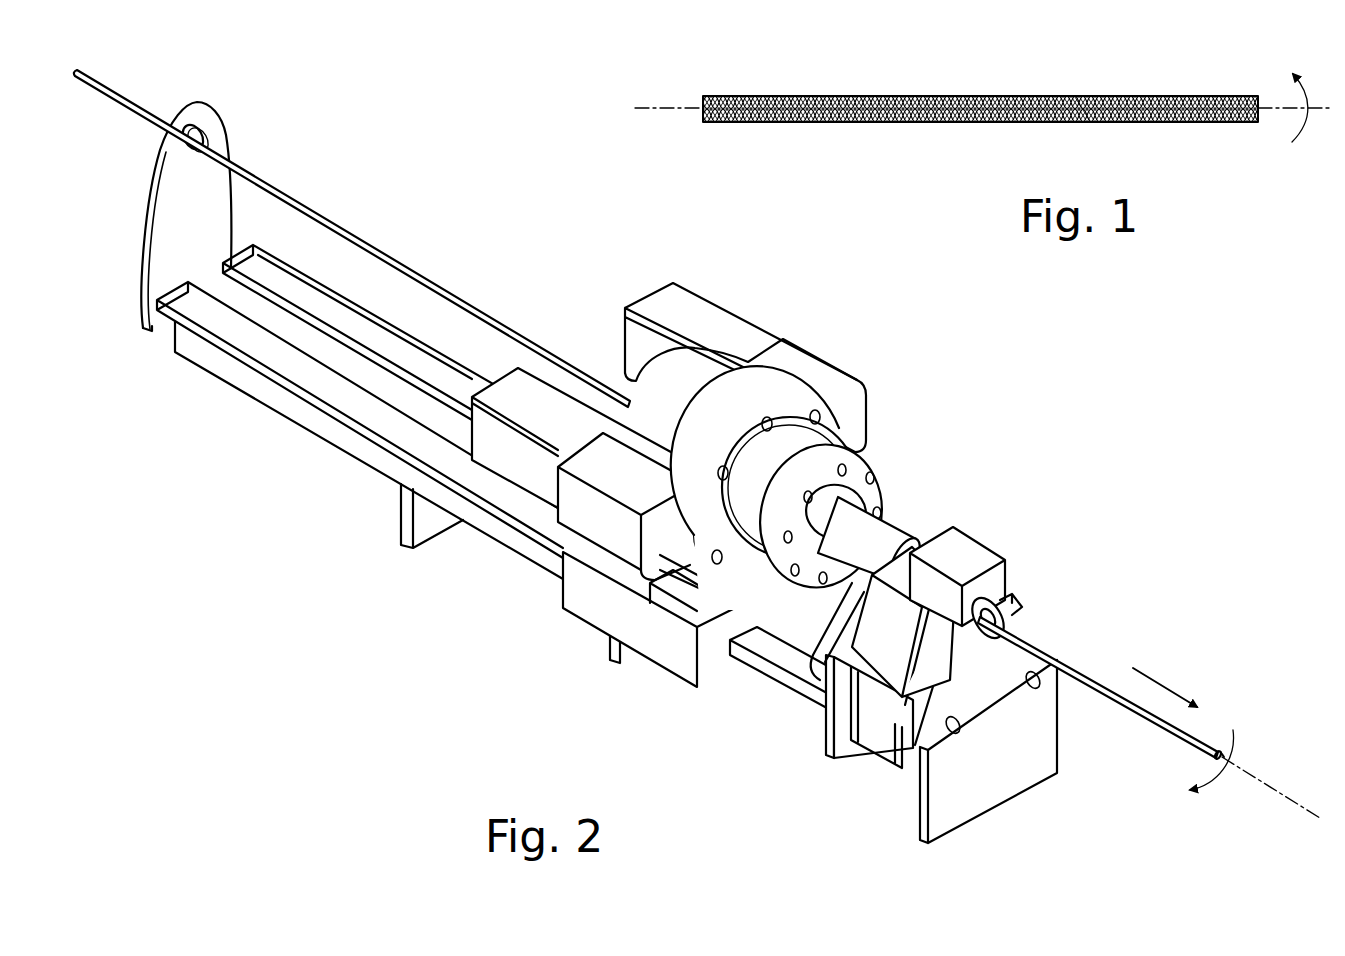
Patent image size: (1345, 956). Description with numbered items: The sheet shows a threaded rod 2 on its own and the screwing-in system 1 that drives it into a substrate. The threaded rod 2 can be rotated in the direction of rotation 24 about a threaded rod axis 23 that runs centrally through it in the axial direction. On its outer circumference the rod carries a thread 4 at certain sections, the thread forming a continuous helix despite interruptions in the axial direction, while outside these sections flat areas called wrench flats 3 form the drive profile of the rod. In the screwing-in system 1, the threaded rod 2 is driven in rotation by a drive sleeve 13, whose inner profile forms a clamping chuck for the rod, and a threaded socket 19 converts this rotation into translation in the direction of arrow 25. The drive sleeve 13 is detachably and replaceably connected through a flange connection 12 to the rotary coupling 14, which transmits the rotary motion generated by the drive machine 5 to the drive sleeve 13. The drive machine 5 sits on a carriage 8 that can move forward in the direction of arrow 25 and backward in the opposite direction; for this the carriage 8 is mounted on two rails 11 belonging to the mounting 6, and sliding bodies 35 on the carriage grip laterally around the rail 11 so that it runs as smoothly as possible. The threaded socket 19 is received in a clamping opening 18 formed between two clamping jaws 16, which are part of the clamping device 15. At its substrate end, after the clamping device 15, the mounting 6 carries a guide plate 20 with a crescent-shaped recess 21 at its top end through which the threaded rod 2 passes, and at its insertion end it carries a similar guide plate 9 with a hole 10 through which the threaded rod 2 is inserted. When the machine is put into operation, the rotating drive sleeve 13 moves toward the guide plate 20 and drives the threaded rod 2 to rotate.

In FIG. 2, the screwing-in system 1 is at (640, 250).
In FIG. 1, the threaded rod 2 is at (963, 96).
In FIG. 2, the threaded rod 2 is at (353, 237).
In FIG. 1, the wrench flats 3 is at (1043, 96).
In FIG. 1, the thread 4 is at (1080, 96).
In FIG. 2, the drive machine 5 is at (808, 370).
In FIG. 2, the mounting 6 is at (487, 523).
In FIG. 2, the carriage 8 is at (665, 643).
In FIG. 2, the guide plate 9 is at (219, 181).
In FIG. 2, the hole 10 is at (197, 130).
In FIG. 2, the rails 11 is at (292, 364).
In FIG. 2, the flange connection 12 is at (863, 460).
In FIG. 2, the drive sleeve 13 is at (877, 537).
In FIG. 2, the rotary coupling 14 is at (793, 446).
In FIG. 2, the clamping device 15 is at (910, 646).
In FIG. 2, the clamping jaws 16 is at (985, 565).
In FIG. 2, the clamping opening 18 is at (972, 560).
In FIG. 2, the threaded socket 19 is at (992, 594).
In FIG. 2, the guide plate 20 is at (1040, 737).
In FIG. 2, the crescent-shaped recess 21 is at (1017, 613).
In FIG. 1, the threaded rod axis 23 is at (672, 106).
In FIG. 2, the threaded rod axis 23 is at (1260, 781).
In FIG. 1, the direction of rotation 24 is at (1289, 94).
In FIG. 2, the direction of rotation 24 is at (1199, 777).
In FIG. 2, the arrow 25 is at (1160, 679).
In FIG. 2, the sliding bodies 35 is at (1223, 755).